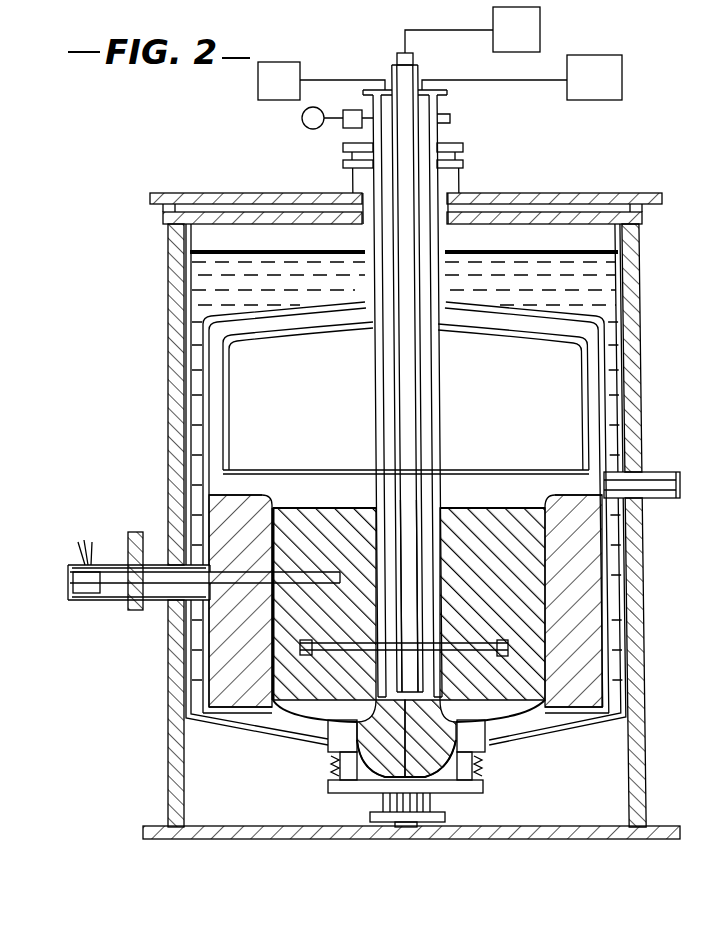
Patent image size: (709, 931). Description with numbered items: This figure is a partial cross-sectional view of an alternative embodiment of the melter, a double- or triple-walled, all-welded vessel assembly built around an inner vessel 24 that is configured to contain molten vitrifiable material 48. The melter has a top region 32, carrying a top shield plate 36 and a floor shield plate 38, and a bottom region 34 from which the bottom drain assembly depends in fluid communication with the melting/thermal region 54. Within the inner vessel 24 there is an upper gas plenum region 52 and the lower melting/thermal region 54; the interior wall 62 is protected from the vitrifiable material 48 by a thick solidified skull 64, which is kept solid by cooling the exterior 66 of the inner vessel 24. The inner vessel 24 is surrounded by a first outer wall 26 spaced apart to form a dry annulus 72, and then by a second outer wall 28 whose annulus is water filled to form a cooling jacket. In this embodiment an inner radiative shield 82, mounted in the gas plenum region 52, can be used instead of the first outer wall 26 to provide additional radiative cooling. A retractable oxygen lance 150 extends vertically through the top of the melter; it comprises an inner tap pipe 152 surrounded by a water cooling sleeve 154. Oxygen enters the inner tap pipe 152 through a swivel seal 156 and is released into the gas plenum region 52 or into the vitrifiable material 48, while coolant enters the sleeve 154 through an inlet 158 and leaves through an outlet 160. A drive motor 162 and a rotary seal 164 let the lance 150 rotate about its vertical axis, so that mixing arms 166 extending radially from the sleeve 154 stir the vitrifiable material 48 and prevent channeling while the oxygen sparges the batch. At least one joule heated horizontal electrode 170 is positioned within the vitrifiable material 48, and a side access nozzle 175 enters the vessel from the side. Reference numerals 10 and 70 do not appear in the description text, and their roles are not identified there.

The crystal growing apparatus 10 is at (514, 804).
The inner vessel 24 is at (200, 482).
The first outer wall 26 is at (213, 396).
The second outer wall 28 is at (190, 446).
The top region 32 is at (694, 244).
The bottom region 34 is at (158, 812).
The top shield plate 36 is at (186, 252).
The floor shield plate 38 is at (632, 193).
The molten vitrifiable material 48 is at (323, 535).
The gas plenum region 52 is at (505, 413).
The melting/thermal region 54 is at (487, 545).
The interior wall 62 is at (609, 595).
The skull 64 is at (592, 632).
The exterior 66 is at (623, 566).
The vessel assembly 70 is at (198, 153).
The dry annulus 72 is at (203, 672).
The inner radiative shield 82 is at (221, 358).
The retractable oxygen lance 150 is at (388, 70).
The inner tap pipe 152 is at (410, 190).
The water cooling sleeve 154 is at (388, 190).
The swivel seal 156 is at (397, 57).
The inlet 158 is at (363, 92).
The outlet 160 is at (445, 88).
The drive motor 162 is at (302, 118).
The rotary seal 164 is at (455, 160).
The mixing arms 166 is at (305, 652).
The joule heated horizontal electrode 170 is at (115, 563).
The side access nozzle 175 is at (652, 471).